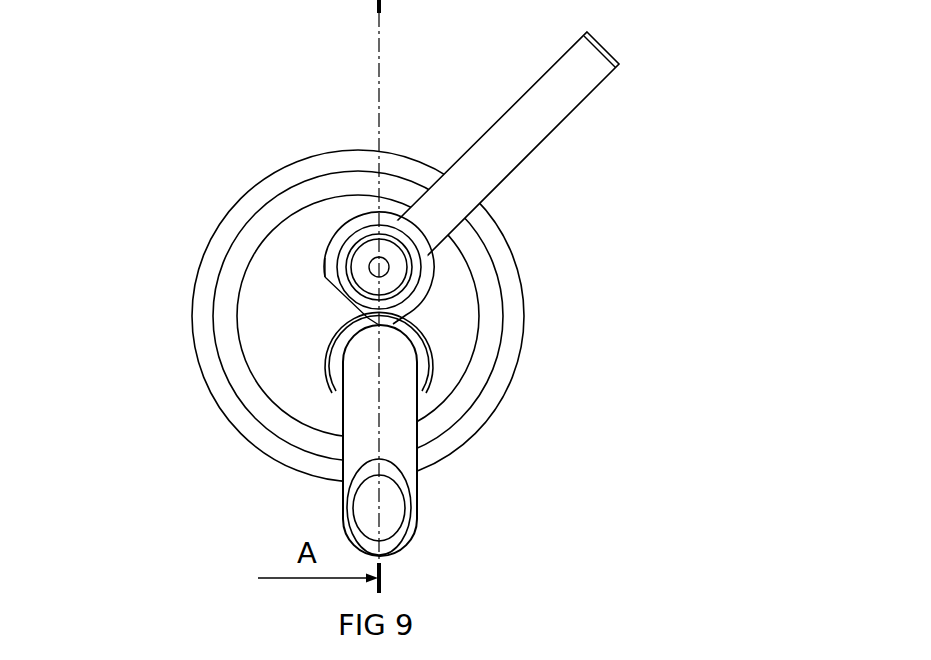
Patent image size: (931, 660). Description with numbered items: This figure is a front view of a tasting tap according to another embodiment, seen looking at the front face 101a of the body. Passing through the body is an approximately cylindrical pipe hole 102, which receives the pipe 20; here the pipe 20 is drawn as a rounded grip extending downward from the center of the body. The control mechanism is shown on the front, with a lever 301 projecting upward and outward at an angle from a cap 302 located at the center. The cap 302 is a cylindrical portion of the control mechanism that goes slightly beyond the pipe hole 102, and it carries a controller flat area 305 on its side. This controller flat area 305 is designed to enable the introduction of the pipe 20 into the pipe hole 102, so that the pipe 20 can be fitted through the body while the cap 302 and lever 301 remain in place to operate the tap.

The front face 101a is at (293, 352).
The lever 301 is at (523, 139).
The cap 302 is at (432, 288).
The pipe hole 102 is at (433, 365).
The pipe 20 is at (400, 435).
The controller flat area 305 is at (330, 283).